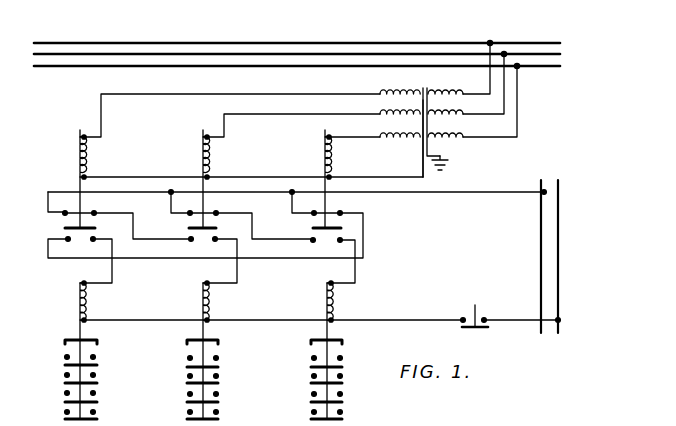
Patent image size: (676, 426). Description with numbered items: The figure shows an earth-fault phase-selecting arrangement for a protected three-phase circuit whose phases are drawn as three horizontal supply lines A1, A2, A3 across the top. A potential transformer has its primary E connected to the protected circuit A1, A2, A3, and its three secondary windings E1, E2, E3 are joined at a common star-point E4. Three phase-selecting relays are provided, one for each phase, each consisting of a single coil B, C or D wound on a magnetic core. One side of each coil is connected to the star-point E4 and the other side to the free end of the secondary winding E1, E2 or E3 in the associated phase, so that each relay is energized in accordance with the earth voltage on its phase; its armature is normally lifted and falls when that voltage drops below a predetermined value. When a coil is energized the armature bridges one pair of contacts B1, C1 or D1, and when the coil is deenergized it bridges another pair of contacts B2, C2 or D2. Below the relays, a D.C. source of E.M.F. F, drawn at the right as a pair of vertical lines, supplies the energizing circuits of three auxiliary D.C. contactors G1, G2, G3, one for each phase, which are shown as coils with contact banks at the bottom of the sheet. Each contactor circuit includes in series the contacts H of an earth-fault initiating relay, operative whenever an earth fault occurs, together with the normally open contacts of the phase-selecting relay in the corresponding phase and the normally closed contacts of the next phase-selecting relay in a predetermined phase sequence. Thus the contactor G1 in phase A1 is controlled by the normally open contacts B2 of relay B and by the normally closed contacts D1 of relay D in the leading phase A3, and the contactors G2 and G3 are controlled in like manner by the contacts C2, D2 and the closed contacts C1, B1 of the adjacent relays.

The first phase of the protected circuit A1 is at (144, 43).
The second phase of the protected circuit A2 is at (192, 53).
The third phase of the protected circuit A3 is at (219, 66).
The phase-selecting relay coil B is at (77, 150).
The normally closed contacts of relay B B1 is at (93, 212).
The normally open contacts of relay B B2 is at (93, 240).
The phase-selecting relay coil C is at (200, 150).
The normally closed contacts of relay C C1 is at (216, 212).
The normally open contacts of relay C C2 is at (216, 240).
The phase-selecting relay coil D is at (322, 151).
The normally closed contacts of relay D D1 is at (341, 213).
The normally open contacts of relay D D2 is at (341, 241).
The potential transformer primary E is at (413, 122).
The potential transformer secondary winding E1 is at (390, 93).
The potential transformer secondary winding E2 is at (404, 112).
The potential transformer secondary winding E3 is at (407, 141).
The star-point of the secondary E4 is at (443, 165).
The D.C. source of E.M.F. F is at (541, 245).
The auxiliary D.C. contactor G1 is at (74, 297).
The auxiliary D.C. contactor G2 is at (198, 293).
The auxiliary D.C. contactor G3 is at (321, 295).
The contacts of earth-fault initiating relay H is at (470, 311).